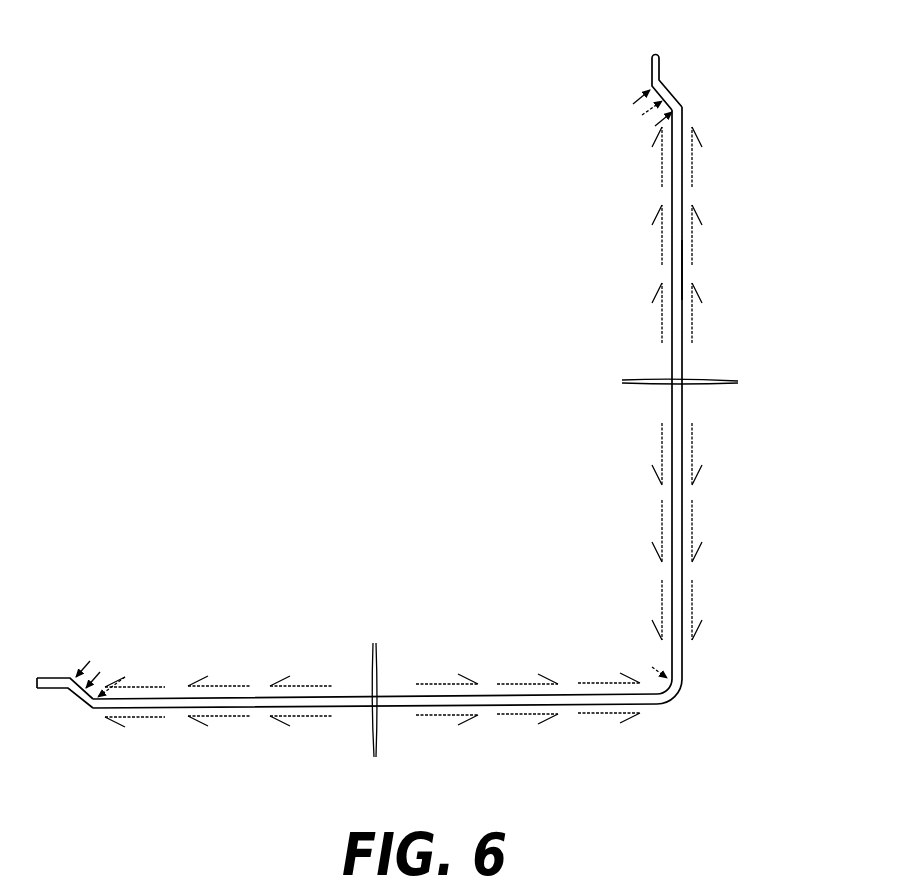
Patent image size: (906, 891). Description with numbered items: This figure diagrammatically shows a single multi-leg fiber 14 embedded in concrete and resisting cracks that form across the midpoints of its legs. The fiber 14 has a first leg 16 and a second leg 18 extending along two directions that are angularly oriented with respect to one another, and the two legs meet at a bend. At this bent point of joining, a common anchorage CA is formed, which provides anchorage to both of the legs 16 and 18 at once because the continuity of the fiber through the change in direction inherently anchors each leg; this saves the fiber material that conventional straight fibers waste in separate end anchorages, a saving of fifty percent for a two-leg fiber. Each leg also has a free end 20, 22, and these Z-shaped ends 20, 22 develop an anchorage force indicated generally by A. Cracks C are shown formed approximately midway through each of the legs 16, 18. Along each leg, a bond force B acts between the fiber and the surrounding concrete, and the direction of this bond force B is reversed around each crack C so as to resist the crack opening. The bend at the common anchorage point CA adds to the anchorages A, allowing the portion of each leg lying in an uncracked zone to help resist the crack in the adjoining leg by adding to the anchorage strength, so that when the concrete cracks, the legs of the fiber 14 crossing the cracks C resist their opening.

The fiber 14 is at (684, 572).
The first leg 16 is at (263, 697).
The second leg 18 is at (684, 272).
The free end 20 is at (52, 679).
The free end 22 is at (661, 68).
The anchorage force A is at (641, 118).
The bond force B is at (696, 163).
The crack C is at (707, 392).
The common anchorage CA is at (640, 661).